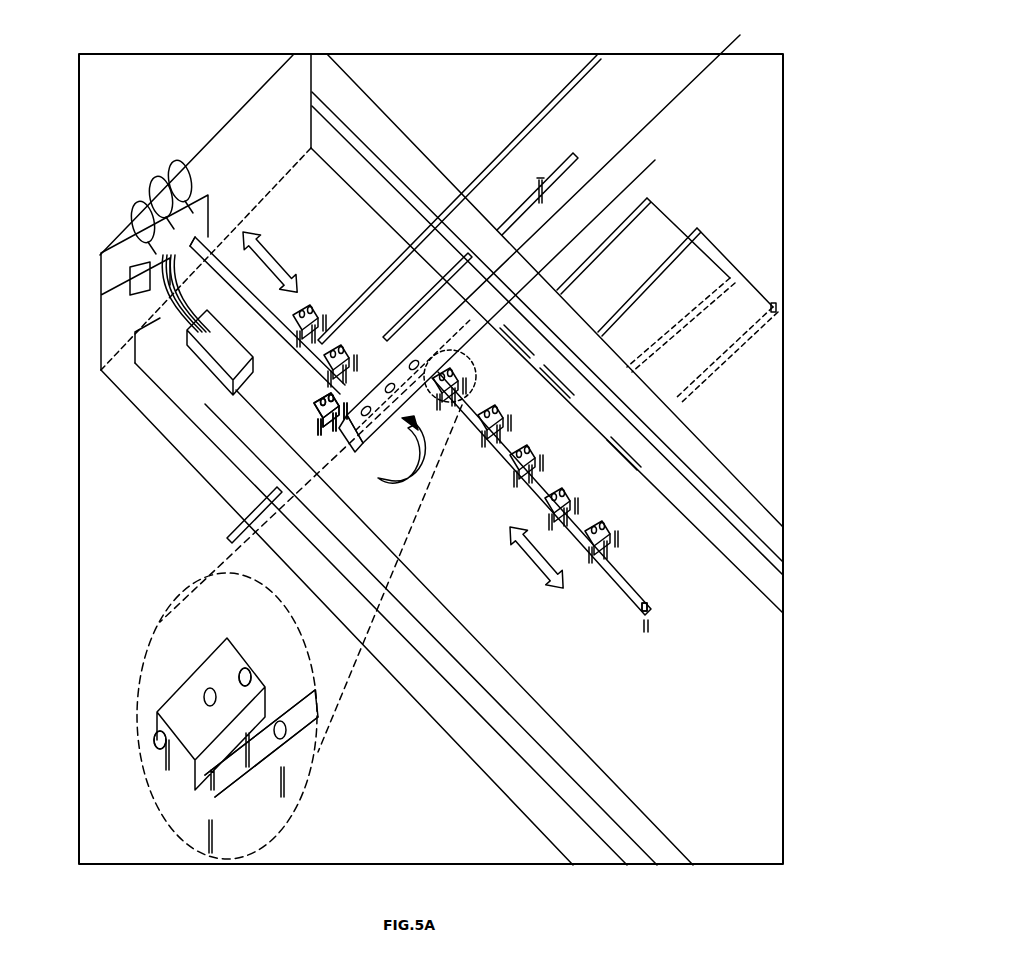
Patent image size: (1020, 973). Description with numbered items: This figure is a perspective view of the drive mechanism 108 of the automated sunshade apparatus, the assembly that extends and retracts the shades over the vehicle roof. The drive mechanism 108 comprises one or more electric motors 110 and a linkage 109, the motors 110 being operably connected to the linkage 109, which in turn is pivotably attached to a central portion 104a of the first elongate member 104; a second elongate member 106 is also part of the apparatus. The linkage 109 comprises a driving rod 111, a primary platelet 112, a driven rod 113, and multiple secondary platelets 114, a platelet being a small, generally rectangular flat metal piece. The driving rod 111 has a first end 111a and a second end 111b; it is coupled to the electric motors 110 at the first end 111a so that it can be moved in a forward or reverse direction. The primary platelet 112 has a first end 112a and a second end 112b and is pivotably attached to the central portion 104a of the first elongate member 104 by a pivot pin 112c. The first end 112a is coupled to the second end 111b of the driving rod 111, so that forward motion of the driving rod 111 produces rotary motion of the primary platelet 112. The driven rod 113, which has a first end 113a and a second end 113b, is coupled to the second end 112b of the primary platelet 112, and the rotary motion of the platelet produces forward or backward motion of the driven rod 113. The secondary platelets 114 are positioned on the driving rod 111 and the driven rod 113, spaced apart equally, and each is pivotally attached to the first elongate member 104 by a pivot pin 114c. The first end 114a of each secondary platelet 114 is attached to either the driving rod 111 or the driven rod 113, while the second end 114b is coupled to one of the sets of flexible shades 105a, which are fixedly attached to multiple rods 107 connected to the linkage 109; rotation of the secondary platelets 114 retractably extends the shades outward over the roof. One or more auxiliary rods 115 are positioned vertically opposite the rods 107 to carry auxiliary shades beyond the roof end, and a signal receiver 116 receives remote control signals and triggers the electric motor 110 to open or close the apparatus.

The first elongate member 104 is at (575, 860).
The central portion of the first elongate member 104a is at (419, 486).
The flexible shades 105a is at (702, 262).
The second elongate member 106 is at (656, 862).
The rods 107 is at (567, 158).
The drive mechanism 108 is at (414, 40).
The linkage 109 is at (288, 395).
The electric motors 110 is at (172, 167).
The driving rod 111 is at (208, 270).
The first end of the driving rod 111a is at (188, 247).
The second end of the driving rod 111b is at (343, 410).
The primary platelet 112 is at (466, 350).
The first end of the primary platelet 112a is at (348, 438).
The second end of the primary platelet 112b is at (430, 338).
The pivot pin 112c is at (385, 442).
The driven rod 113 is at (632, 580).
The first end of the driven rod 113a is at (548, 284).
The second end of the driven rod 113b is at (662, 612).
The secondary platelets 114 is at (609, 527).
The first end of the secondary platelet 114a is at (157, 742).
The second end of the secondary platelet 114b is at (241, 662).
The pivot pin 114c is at (276, 790).
The auxiliary rods 115 is at (224, 538).
The signal receiver 116 is at (193, 356).